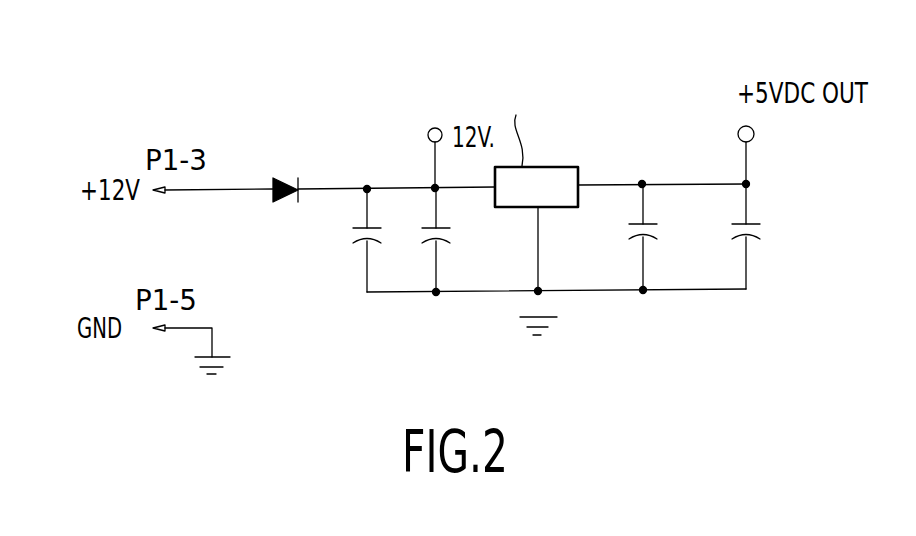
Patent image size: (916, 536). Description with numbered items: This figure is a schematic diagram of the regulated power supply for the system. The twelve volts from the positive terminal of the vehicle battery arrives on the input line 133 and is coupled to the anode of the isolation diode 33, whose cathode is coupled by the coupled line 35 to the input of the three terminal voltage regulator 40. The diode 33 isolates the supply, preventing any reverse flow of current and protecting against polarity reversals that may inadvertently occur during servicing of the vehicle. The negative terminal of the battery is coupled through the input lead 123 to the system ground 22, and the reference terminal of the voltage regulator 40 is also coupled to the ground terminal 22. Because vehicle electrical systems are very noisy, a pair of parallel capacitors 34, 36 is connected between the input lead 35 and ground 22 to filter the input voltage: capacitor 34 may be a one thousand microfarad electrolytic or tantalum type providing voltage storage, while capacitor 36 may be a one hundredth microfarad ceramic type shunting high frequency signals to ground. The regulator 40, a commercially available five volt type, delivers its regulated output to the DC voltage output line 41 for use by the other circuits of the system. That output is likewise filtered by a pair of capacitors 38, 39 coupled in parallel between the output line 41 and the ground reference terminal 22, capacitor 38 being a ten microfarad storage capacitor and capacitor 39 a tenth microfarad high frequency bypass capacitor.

The system ground 22 is at (223, 354).
The isolation diode 33 is at (283, 178).
The capacitor 34 is at (373, 256).
The coupled line 35 is at (402, 186).
The capacitor 36 is at (441, 254).
The capacitor 38 is at (650, 246).
The capacitor 39 is at (753, 241).
The voltage regulator 40 is at (580, 185).
The DC voltage output line 41 is at (700, 183).
The input lead 123 is at (208, 326).
The input line 133 is at (222, 191).